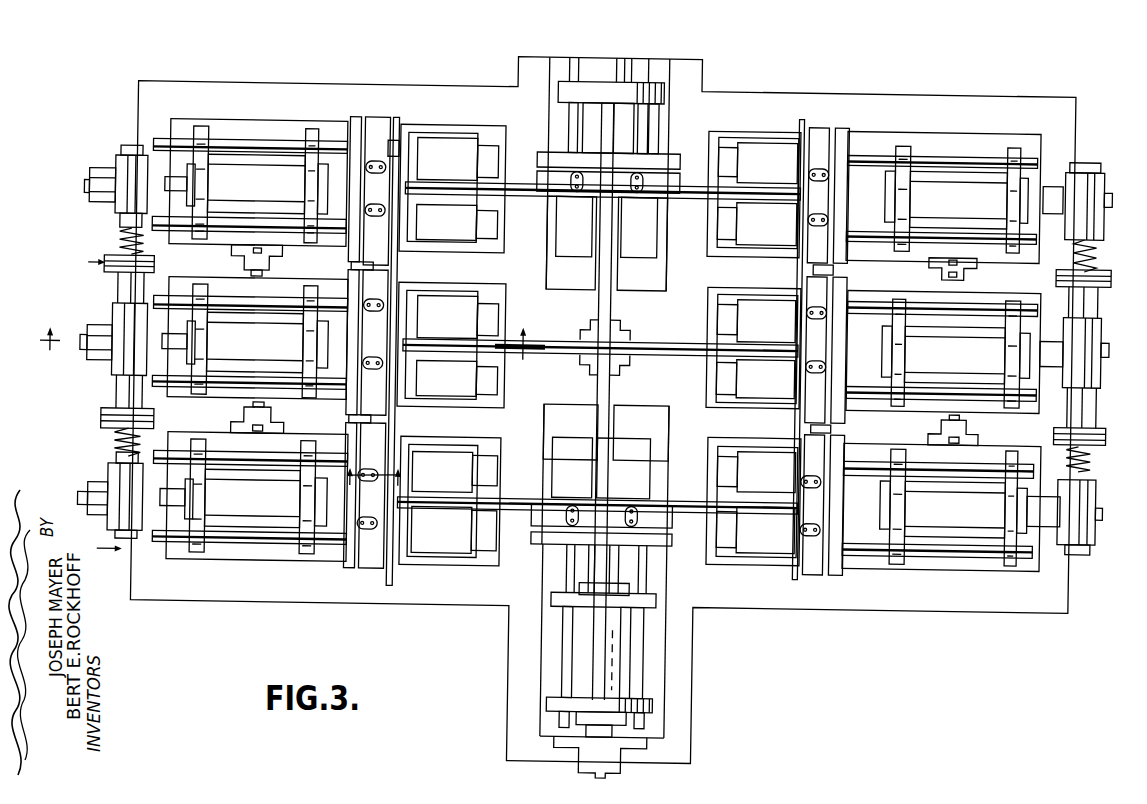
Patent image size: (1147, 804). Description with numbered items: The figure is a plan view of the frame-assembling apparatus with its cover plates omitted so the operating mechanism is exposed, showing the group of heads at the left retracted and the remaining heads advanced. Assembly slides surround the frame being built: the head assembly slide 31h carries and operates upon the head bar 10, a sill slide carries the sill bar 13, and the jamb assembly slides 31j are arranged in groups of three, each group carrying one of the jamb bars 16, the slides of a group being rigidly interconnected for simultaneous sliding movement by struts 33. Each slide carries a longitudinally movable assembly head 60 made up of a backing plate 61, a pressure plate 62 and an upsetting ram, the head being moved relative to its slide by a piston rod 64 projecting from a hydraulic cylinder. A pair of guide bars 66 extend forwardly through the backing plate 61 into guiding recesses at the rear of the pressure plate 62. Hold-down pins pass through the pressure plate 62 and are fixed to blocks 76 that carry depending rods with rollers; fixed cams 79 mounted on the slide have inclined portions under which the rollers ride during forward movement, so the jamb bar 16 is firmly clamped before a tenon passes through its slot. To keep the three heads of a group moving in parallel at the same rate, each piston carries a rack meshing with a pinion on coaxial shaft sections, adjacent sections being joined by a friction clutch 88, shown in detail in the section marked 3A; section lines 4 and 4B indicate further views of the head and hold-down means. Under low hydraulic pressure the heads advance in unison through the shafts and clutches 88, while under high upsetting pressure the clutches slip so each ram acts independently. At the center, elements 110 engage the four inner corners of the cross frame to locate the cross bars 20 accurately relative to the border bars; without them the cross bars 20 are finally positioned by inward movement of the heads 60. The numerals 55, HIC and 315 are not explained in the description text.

The jamb assembly slides 31j is at (234, 126).
The head assembly slide 31h is at (666, 79).
The guide bars 66 is at (274, 147).
The fixed cams 79 is at (389, 143).
The head bar 10 is at (517, 185).
The jamb bar 16 is at (396, 280).
The cross bars 20 is at (611, 308).
The locating elements 110 is at (595, 365).
The gear unit 55 is at (494, 385).
The section line 4 is at (279, 336).
The friction clutch 88 is at (106, 265).
The section line 3A is at (87, 416).
The assembly head 60 is at (255, 347).
The blocks 76 is at (366, 304).
The struts 33 is at (263, 423).
The piston rod 64 is at (338, 359).
The section line 4B is at (382, 479).
The backing plate 61 is at (351, 572).
The pressure plate 62 is at (369, 572).
The sill bar 13 is at (698, 515).
The hydraulic cylinder HIC is at (578, 642).
The cylinder housing 315 is at (605, 661).